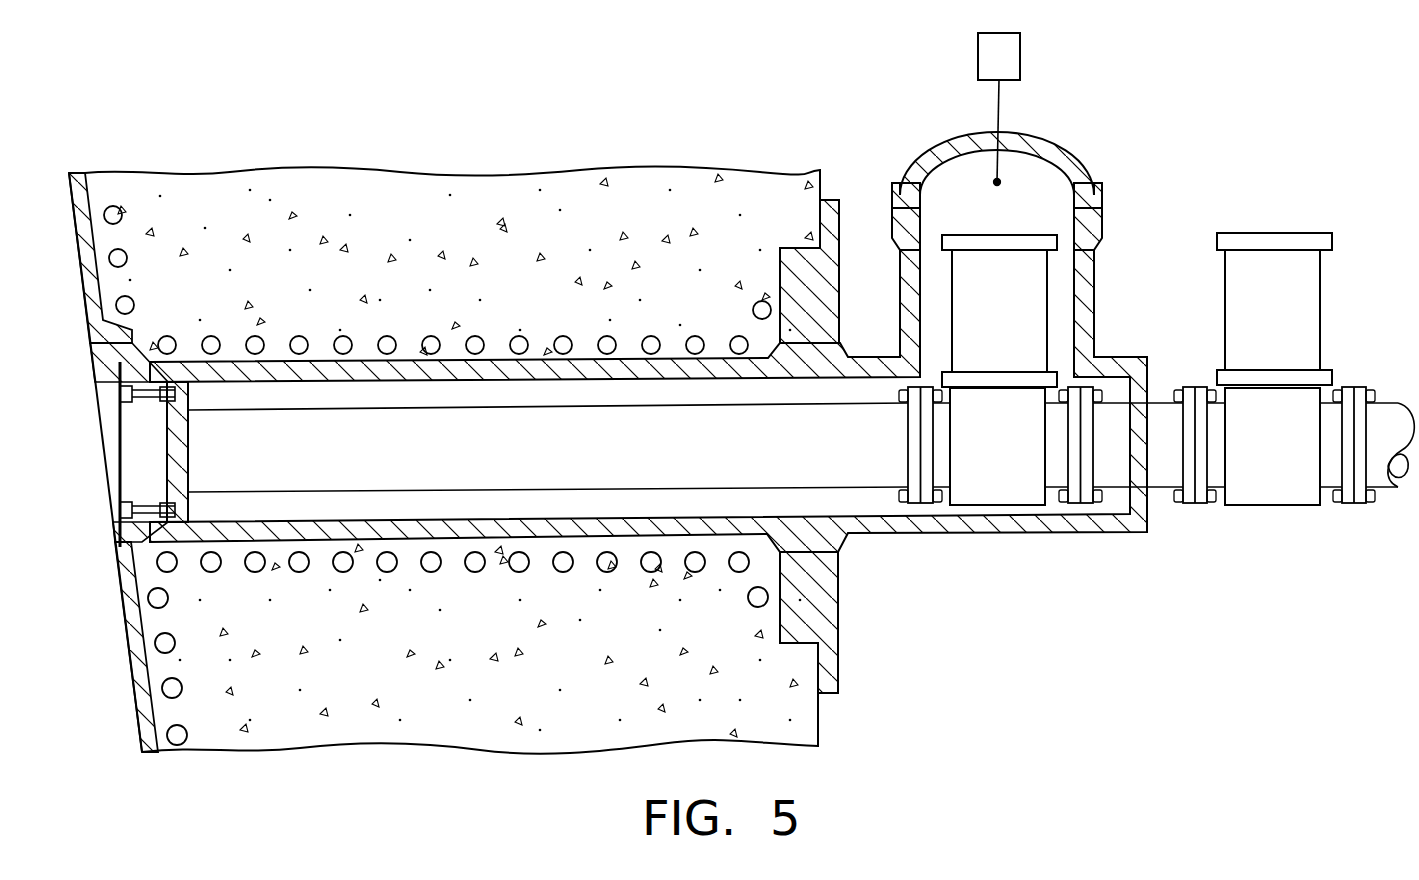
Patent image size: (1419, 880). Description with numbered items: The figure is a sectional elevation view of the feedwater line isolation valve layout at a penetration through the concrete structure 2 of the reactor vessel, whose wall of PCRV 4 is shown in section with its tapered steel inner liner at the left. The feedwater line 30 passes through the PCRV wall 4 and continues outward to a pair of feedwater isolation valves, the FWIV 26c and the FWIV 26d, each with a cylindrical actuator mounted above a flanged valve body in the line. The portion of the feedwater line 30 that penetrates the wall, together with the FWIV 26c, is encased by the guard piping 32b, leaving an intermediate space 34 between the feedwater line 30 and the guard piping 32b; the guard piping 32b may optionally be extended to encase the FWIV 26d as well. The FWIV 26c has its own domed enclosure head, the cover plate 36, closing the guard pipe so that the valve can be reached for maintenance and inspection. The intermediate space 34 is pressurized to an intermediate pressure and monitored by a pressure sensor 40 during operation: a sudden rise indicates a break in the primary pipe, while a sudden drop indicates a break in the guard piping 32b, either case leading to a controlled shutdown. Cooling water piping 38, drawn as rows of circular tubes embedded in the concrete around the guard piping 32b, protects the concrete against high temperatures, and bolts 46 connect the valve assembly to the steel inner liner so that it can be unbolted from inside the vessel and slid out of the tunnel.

The concrete structure 2 is at (826, 728).
The PCRV wall 4 is at (133, 657).
The feedwater isolation valve 26c is at (1048, 288).
The feedwater isolation valve 26d is at (1322, 278).
The feedwater line 30 is at (655, 399).
The guard piping 32b is at (995, 537).
The intermediate space 34 is at (862, 509).
The cover plate 36 is at (1057, 140).
The cooling water piping 38 is at (508, 352).
The pressure sensor 40 is at (978, 62).
The bolts 46 is at (165, 501).